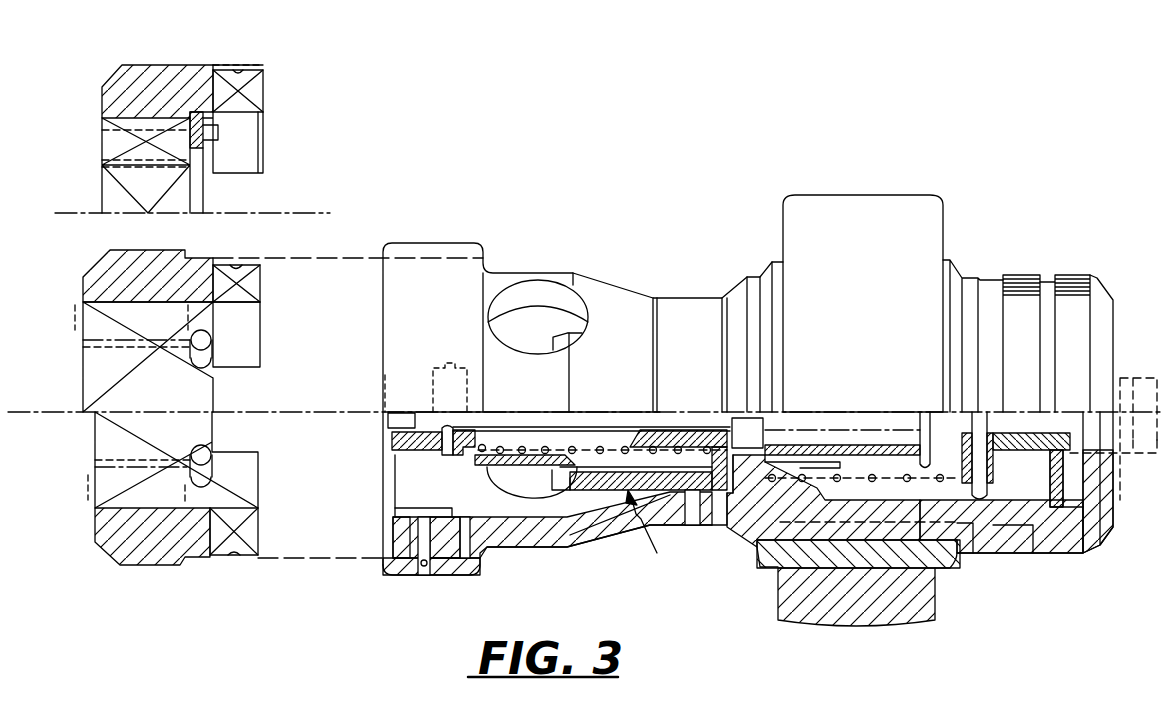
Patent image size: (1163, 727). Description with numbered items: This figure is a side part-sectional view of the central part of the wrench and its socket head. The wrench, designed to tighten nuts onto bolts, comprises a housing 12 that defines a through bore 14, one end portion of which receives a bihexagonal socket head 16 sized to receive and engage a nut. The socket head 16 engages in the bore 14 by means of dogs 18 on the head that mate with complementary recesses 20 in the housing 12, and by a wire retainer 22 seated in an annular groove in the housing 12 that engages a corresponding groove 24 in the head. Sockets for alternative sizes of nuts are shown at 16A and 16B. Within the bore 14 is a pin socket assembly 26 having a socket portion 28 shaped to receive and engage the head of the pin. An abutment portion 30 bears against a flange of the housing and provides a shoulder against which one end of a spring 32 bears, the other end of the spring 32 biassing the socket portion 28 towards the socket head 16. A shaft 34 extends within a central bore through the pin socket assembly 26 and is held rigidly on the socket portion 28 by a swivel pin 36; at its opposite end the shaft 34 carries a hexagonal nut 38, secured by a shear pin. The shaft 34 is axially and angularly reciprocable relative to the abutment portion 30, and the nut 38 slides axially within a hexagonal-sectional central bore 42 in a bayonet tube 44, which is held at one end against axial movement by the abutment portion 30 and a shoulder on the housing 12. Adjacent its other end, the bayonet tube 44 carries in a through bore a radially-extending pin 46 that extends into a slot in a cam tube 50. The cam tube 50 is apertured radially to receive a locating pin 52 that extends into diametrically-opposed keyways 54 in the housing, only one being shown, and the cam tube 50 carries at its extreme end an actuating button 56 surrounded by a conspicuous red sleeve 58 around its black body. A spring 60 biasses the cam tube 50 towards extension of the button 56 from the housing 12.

The housing 12 is at (615, 293).
The through bore 14 is at (600, 514).
The bihexagonal socket head 16 is at (111, 549).
The socket 16A is at (83, 286).
The socket 16B is at (164, 82).
The dogs 18 is at (253, 533).
The recesses 20 is at (400, 535).
The wire retainer 22 is at (423, 563).
The groove 24 is at (240, 266).
The pin socket assembly 26 is at (624, 535).
The socket portion 28 is at (406, 443).
The abutment portion 30 is at (697, 412).
The spring 32 is at (596, 413).
The shaft 34 is at (533, 413).
The swivel pin 36 is at (447, 455).
The hexagonal nut 38 is at (755, 421).
The hexagonal-sectional central bore 42 is at (832, 416).
The bayonet tube 44 is at (761, 458).
The radially-extending pin 46 is at (896, 412).
The cam tube 50 is at (946, 416).
The locating pin 52 is at (977, 431).
The keyways 54 is at (1043, 501).
The actuating button 56 is at (1145, 456).
The red sleeve 58 is at (1124, 376).
The spring 60 is at (909, 482).